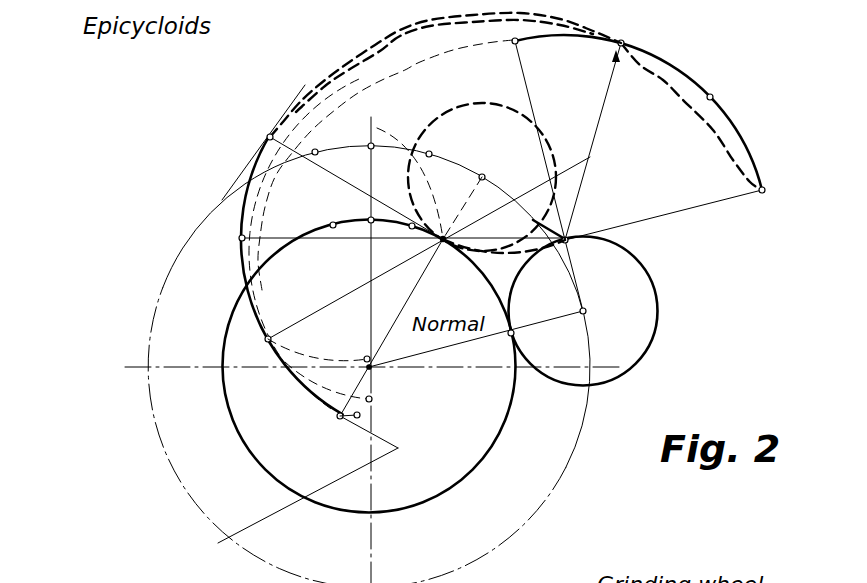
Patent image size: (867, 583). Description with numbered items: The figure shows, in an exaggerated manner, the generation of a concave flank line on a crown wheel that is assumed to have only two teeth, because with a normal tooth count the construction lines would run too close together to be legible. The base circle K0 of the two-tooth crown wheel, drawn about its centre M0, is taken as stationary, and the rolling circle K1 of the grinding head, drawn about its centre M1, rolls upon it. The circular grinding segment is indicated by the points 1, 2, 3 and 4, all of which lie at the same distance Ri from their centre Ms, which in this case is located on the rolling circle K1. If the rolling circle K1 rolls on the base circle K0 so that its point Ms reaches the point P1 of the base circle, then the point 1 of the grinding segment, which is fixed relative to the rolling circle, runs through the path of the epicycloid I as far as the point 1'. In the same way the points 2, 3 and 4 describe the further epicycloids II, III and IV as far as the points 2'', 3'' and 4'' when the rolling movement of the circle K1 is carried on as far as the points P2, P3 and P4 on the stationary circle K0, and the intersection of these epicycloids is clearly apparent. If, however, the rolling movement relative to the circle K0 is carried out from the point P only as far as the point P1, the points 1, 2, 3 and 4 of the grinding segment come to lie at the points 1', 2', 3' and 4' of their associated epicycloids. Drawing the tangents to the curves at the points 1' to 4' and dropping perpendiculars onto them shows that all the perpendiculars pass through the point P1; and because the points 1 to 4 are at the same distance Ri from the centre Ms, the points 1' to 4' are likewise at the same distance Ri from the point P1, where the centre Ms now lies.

The base circle K0 is at (483, 463).
The rolling circle K1 is at (657, 340).
The center of base circle K0 M0 is at (372, 350).
The center of rolling circle K1 M1 is at (495, 303).
The centre of the grinding segment Ms is at (647, 216).
The starting point of rolling P is at (522, 342).
The point on the base circle P1 is at (403, 276).
The point on the base circle P2 is at (401, 205).
The point on the base circle P3 is at (359, 209).
The point on the base circle P4 is at (322, 214).
The radius of the grinding segment Ri is at (444, 190).
The point of the grinding segment 1 is at (506, 52).
The point of the grinding segment 2 is at (626, 30).
The point of the grinding segment 3 is at (719, 90).
The point of the grinding segment 4 is at (771, 199).
The point on epicycloid I 1' is at (239, 492).
The point on epicycloid II 2' is at (254, 349).
The point on epicycloid III 3' is at (229, 240).
The point on epicycloid IV 4' is at (263, 142).
The end point of epicycloid II 2'' is at (367, 425).
The end point of epicycloid III 3'' is at (341, 387).
The end point of epicycloid IV 4'' is at (319, 348).
The epicycloid I is at (353, 89).
The epicycloid II is at (330, 78).
The epicycloid III is at (317, 85).
The epicycloid IV is at (305, 91).